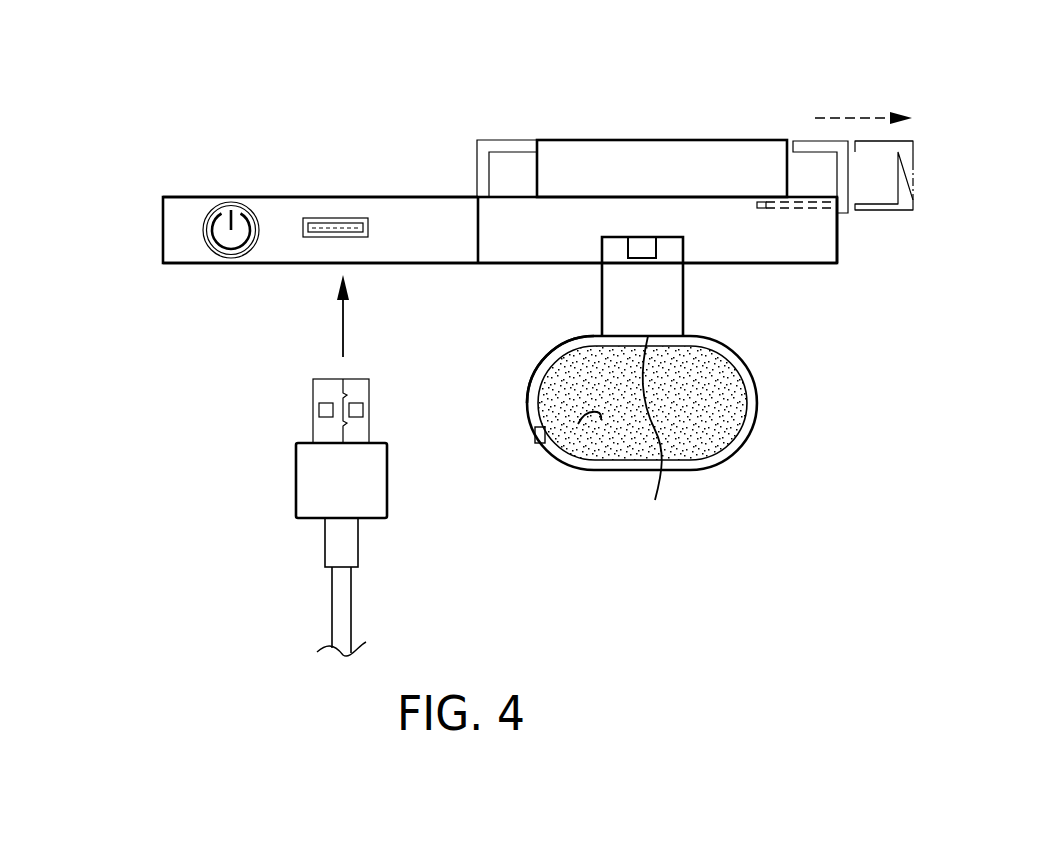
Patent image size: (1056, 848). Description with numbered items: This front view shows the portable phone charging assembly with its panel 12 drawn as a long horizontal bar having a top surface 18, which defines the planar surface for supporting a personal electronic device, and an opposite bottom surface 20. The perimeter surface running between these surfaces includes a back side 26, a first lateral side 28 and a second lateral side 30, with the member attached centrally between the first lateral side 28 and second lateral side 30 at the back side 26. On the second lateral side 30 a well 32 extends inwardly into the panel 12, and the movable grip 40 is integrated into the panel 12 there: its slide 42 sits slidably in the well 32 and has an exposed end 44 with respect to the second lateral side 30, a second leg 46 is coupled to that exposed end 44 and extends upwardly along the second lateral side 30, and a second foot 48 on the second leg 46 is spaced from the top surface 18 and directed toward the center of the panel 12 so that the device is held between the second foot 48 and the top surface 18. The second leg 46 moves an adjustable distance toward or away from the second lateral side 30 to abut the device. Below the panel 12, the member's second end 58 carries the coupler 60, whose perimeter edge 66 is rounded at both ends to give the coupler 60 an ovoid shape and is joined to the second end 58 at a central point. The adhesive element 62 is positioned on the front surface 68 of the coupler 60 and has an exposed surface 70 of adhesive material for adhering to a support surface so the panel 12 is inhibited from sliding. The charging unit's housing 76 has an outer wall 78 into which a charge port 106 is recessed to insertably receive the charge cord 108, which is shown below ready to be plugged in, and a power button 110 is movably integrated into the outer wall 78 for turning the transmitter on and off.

The panel 12 is at (837, 263).
The top surface 18 is at (723, 197).
The bottom surface 20 is at (793, 263).
The back side 26 is at (510, 243).
The first lateral side 28 is at (478, 228).
The second lateral side 30 is at (840, 233).
The well 32 is at (802, 197).
The movable grip 40 is at (927, 130).
The slide 42 is at (875, 211).
The exposed end 44 is at (895, 210).
The second leg 46 is at (912, 167).
The second foot 48 is at (875, 140).
The second end 58 is at (655, 500).
The coupler 60 is at (757, 400).
The adhesive element 62 is at (703, 423).
The perimeter edge 66 is at (592, 337).
The front surface 68 is at (535, 437).
The exposed surface 70 is at (596, 424).
The housing 76 is at (292, 208).
The outer wall 78 is at (416, 243).
The charge port 106 is at (333, 218).
The charge cord 108 is at (298, 472).
The power button 110 is at (213, 208).